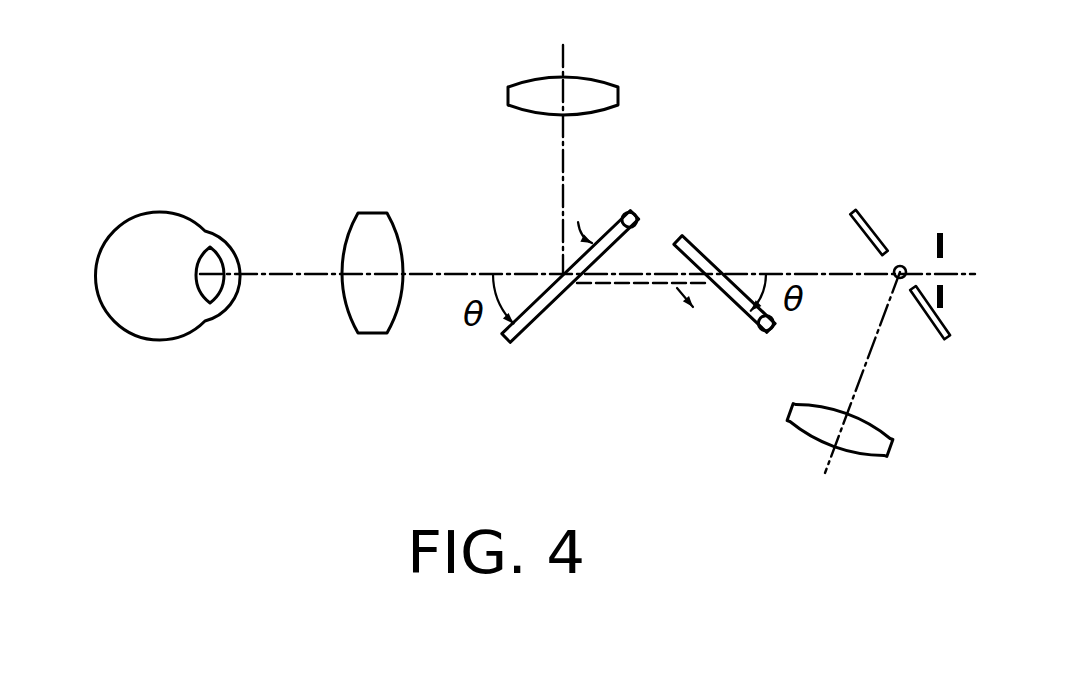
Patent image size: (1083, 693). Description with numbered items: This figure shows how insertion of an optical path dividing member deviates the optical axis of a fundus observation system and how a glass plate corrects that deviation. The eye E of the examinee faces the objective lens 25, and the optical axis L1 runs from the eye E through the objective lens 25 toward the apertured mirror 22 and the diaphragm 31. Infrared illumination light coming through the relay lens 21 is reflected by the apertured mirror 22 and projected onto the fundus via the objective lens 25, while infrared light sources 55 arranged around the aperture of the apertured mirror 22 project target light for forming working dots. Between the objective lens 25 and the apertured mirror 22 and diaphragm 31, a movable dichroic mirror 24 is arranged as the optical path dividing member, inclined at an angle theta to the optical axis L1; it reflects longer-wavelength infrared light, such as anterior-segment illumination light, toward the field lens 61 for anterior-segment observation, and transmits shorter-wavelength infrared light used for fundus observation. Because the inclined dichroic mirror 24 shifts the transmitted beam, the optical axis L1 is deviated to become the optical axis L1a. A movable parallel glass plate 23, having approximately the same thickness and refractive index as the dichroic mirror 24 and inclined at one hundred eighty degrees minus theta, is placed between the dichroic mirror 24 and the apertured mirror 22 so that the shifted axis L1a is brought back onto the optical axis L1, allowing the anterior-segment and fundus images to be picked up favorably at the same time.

The eye E is at (145, 317).
The relay lens 21 is at (813, 415).
The apertured mirror 22 is at (878, 230).
The parallel glass plate 23 is at (683, 243).
The dichroic mirror 24 is at (524, 333).
The objective lens 25 is at (380, 238).
The diaphragm 31 is at (943, 233).
The infrared light source 55 is at (900, 279).
The field lens 61 is at (597, 92).
The optical axis L1 is at (431, 276).
The deviated optical axis L1a is at (643, 284).